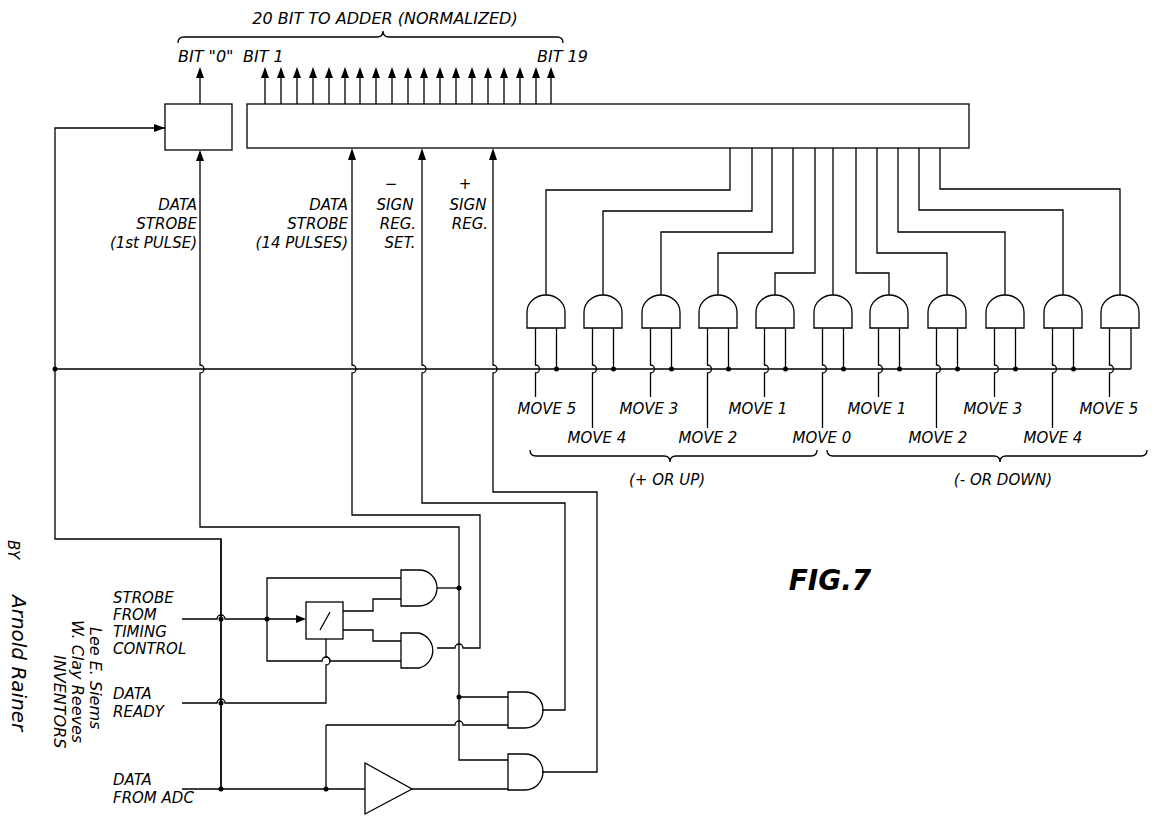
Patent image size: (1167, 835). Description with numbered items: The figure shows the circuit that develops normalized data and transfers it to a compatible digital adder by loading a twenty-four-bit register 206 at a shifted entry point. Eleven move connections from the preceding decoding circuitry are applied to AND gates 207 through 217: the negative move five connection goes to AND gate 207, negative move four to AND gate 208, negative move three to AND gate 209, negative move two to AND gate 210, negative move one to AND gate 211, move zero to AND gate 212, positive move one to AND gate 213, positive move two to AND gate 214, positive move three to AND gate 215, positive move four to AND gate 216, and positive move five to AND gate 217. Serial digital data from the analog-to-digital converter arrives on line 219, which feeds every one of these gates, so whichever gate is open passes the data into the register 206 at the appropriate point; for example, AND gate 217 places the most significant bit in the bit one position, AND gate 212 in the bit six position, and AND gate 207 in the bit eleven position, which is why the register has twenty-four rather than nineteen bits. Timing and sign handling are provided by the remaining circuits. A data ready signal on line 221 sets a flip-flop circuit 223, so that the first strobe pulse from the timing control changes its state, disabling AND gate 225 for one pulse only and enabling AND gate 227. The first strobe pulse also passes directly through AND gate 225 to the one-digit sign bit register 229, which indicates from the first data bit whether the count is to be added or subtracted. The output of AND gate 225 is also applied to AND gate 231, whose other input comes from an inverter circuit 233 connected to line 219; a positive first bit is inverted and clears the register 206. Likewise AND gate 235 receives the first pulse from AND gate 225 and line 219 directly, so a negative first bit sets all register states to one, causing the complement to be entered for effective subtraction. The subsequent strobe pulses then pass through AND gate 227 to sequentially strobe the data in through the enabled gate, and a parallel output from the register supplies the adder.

The 24-bit register 206 is at (757, 104).
The AND gate 207 is at (1105, 300).
The AND gate 208 is at (1047, 300).
The AND gate 209 is at (989, 300).
The AND gate 210 is at (931, 300).
The AND gate 211 is at (875, 300).
The AND gate 212 is at (815, 300).
The AND gate 213 is at (760, 300).
The AND gate 214 is at (705, 300).
The AND gate 215 is at (648, 300).
The AND gate 216 is at (590, 300).
The AND gate 217 is at (534, 300).
The line 219 is at (205, 789).
The line 221 is at (251, 664).
The flip-flop circuit 223 is at (327, 602).
The AND gate 225 is at (427, 571).
The AND gate 227 is at (430, 668).
The sign bit one digit register 229 is at (165, 140).
The AND gate 231 is at (543, 755).
The inverter circuit 233 is at (395, 799).
The AND gate 235 is at (532, 692).